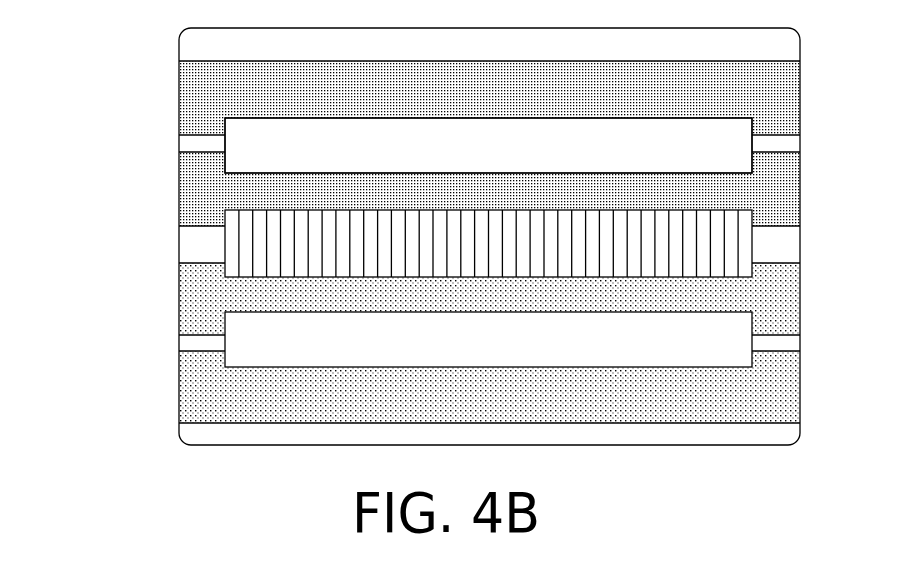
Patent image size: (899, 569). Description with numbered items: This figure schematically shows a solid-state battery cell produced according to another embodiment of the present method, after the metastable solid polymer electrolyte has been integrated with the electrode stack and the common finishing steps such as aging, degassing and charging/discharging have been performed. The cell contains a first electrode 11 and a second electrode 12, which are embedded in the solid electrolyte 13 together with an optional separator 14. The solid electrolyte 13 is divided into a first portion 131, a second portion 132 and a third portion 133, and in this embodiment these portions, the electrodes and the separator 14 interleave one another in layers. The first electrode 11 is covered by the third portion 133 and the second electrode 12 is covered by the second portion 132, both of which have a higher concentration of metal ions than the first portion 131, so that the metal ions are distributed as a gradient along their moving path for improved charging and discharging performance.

The first electrode 11 is at (752, 147).
The second electrode 12 is at (753, 342).
The solid electrolyte 13 is at (75, 95).
The first portion 131 is at (200, 145).
The second portion 132 is at (196, 388).
The third portion 133 is at (198, 93).
The separator 14 is at (753, 242).